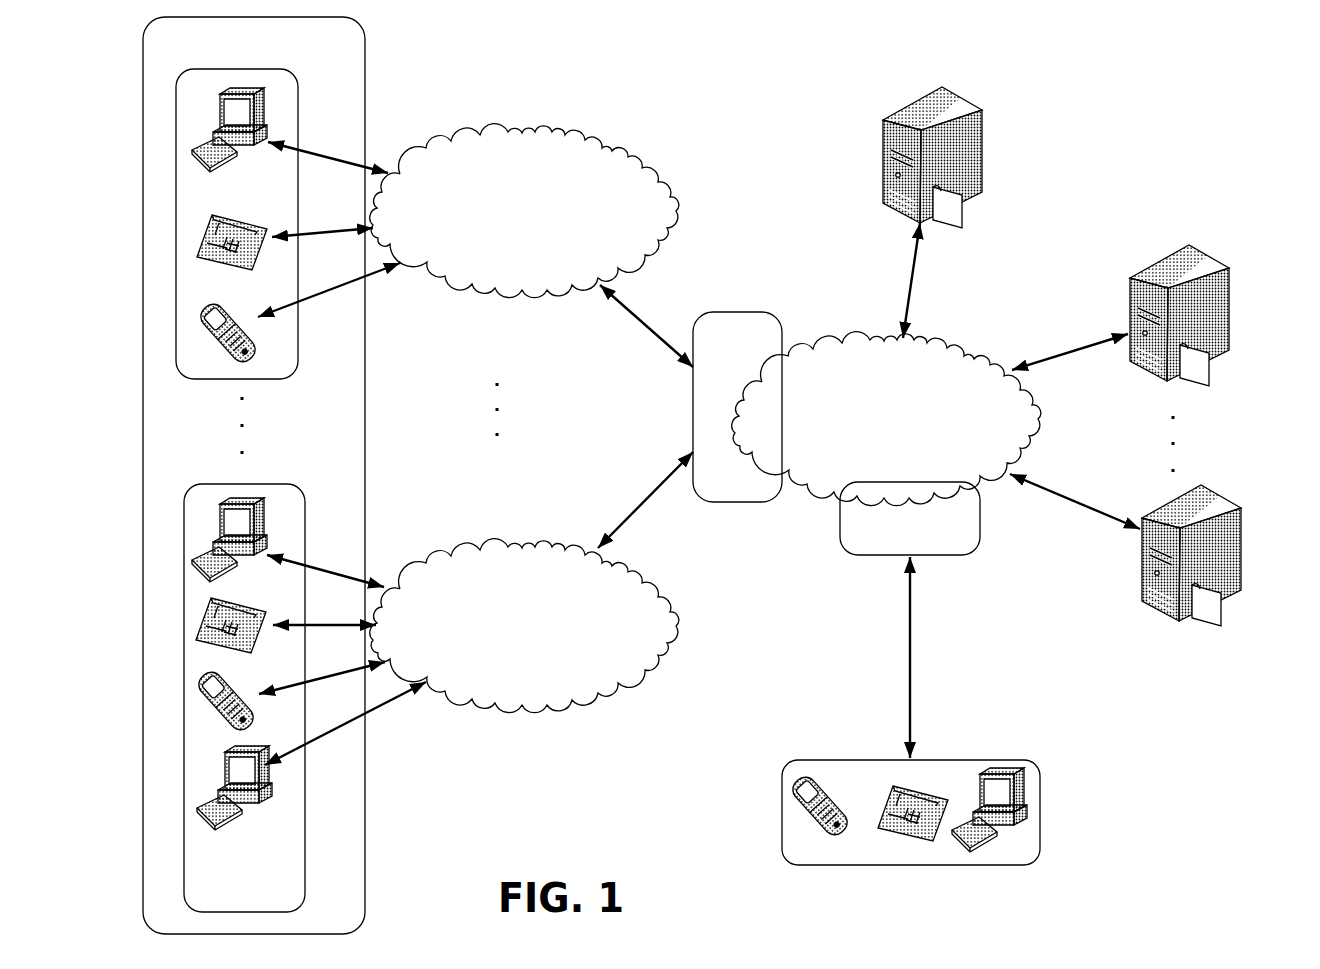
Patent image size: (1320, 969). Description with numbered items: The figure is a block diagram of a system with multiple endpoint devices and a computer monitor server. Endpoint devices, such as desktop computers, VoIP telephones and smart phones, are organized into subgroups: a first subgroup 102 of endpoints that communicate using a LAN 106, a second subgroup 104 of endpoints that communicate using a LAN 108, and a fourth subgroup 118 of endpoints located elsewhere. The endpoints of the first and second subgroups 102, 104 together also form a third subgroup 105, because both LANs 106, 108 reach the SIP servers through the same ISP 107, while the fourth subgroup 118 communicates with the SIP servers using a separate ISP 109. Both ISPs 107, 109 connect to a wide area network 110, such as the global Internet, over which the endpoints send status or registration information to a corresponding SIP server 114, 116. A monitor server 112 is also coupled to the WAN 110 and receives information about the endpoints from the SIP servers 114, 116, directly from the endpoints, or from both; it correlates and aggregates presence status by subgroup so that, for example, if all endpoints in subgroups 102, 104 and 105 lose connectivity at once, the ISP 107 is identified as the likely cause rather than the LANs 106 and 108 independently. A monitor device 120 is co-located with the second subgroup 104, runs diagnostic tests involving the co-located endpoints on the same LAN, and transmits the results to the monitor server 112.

The first subgroup 102 is at (277, 70).
The second subgroup 104 is at (297, 484).
The third subgroup 105 is at (345, 88).
The LAN 106 is at (592, 138).
The ISP 107 is at (770, 312).
The LAN 108 is at (515, 550).
The ISP 109 is at (970, 538).
The wide area network (WAN) 110 is at (958, 346).
The monitor server 112 is at (975, 125).
The SIP server 114 is at (1200, 260).
The SIP server 116 is at (1195, 488).
The fourth subgroup 118 is at (1025, 762).
The monitor device 120 is at (235, 752).